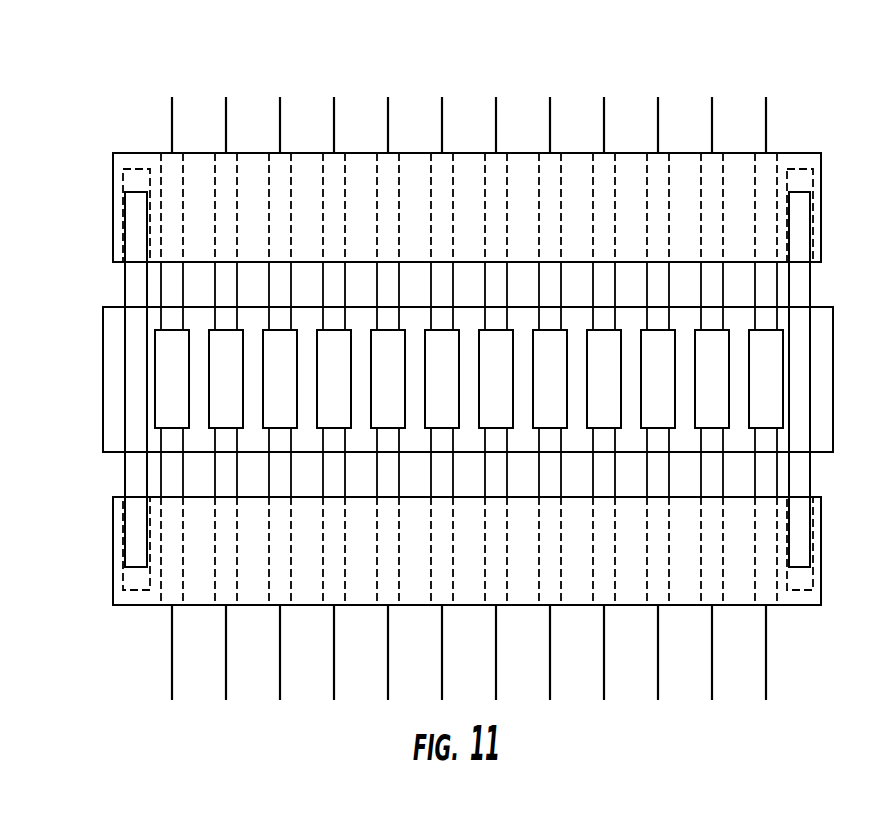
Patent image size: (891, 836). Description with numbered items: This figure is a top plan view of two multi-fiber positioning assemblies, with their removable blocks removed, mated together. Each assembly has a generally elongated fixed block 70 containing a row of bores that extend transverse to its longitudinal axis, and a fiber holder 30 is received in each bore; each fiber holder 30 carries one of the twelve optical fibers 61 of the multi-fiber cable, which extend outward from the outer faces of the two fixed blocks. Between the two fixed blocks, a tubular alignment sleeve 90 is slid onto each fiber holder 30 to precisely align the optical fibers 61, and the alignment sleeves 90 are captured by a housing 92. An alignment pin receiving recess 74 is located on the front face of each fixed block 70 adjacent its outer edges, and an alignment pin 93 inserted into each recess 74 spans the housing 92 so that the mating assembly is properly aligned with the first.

The fiber holder 30 is at (658, 277).
The optical fiber 61 is at (332, 105).
The fixed block 70 is at (787, 153).
The alignment pin receiving recess 74 is at (138, 181).
The tubular alignment sleeve 90 is at (762, 383).
The housing 92 is at (825, 432).
The alignment pin 93 is at (137, 283).